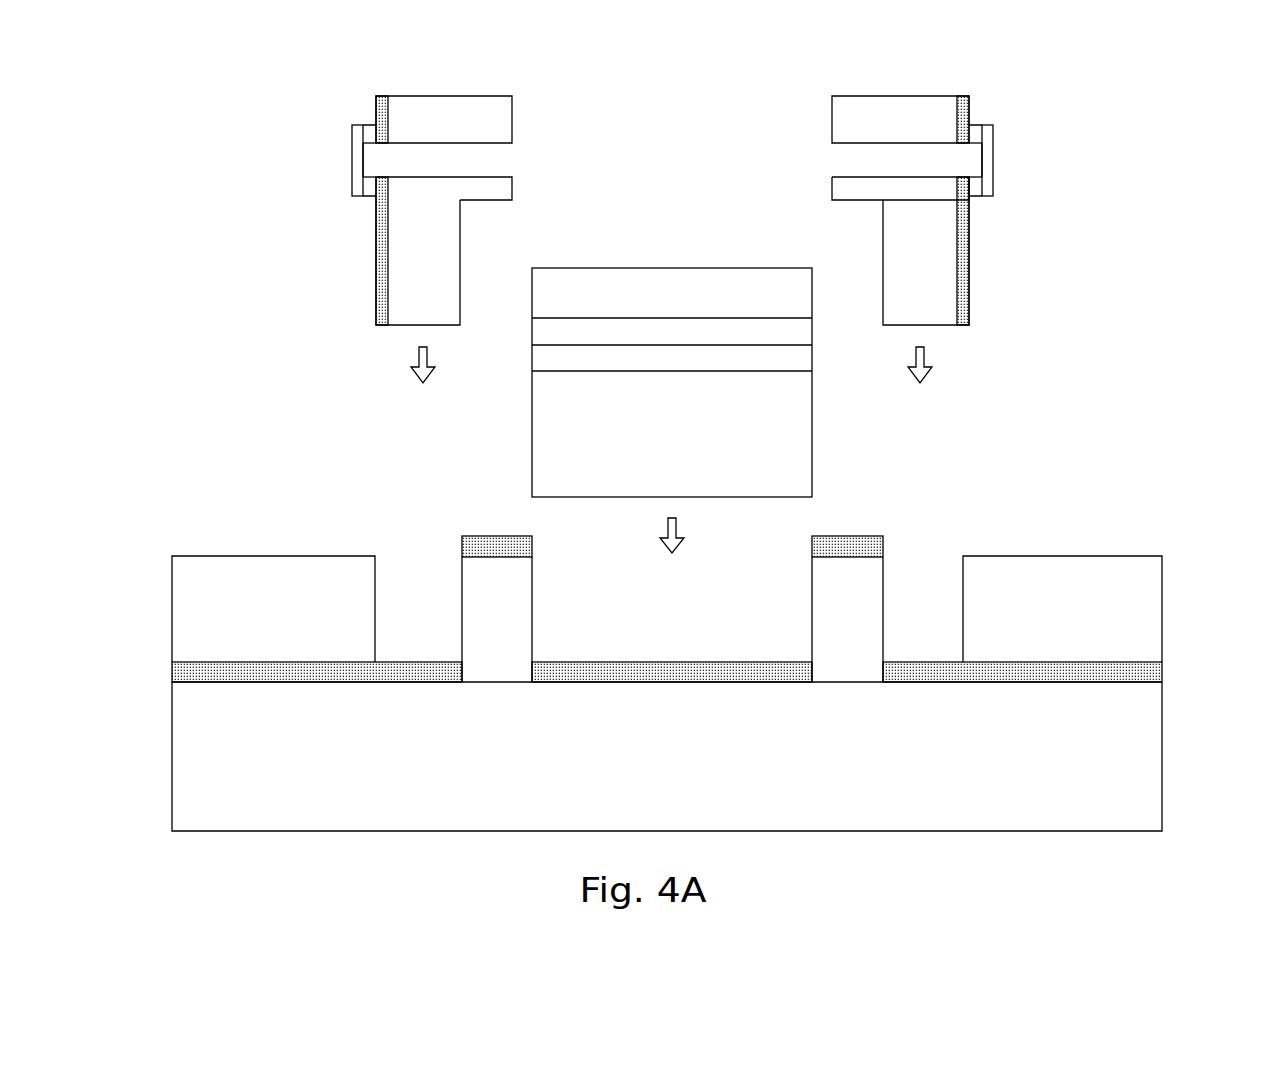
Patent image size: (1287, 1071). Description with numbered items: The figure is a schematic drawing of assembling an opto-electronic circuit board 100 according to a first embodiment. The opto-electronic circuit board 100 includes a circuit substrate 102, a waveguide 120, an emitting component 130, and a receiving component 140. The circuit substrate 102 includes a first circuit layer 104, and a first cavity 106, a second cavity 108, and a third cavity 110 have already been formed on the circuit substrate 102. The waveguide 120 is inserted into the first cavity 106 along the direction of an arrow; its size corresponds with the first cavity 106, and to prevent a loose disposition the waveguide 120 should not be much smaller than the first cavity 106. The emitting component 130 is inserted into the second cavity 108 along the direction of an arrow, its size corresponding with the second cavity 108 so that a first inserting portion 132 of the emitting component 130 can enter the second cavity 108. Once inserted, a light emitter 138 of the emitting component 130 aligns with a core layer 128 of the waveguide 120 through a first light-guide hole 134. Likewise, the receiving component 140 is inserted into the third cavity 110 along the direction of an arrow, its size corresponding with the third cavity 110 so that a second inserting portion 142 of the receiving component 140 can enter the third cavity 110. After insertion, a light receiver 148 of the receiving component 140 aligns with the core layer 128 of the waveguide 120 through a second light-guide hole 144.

The opto-electronic circuit board 100 is at (200, 63).
The circuit substrate 102 is at (1152, 737).
The first circuit layer 104 is at (1157, 665).
The first cavity 106 is at (736, 645).
The second cavity 108 is at (414, 525).
The third cavity 110 is at (927, 522).
The waveguide 120 is at (672, 267).
The core layer 128 is at (710, 330).
The emitting component 130 is at (450, 105).
The first inserting portion 132 is at (407, 267).
The first light-guide hole 134 is at (516, 158).
The light emitter 138 is at (357, 160).
The receiving component 140 is at (897, 105).
The second inserting portion 142 is at (937, 267).
The second light-guide hole 144 is at (826, 158).
The light receiver 148 is at (988, 160).